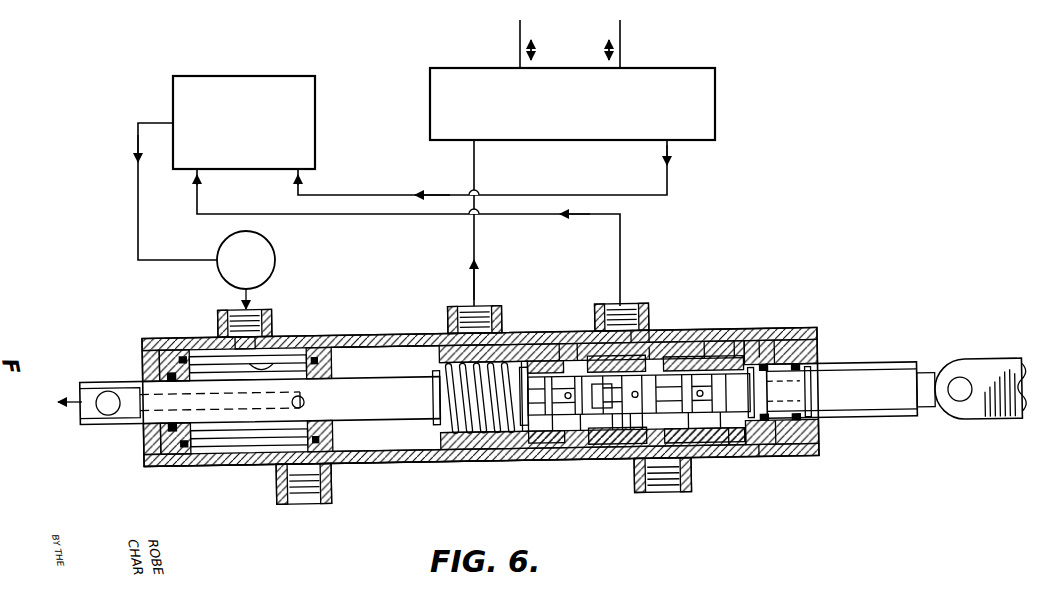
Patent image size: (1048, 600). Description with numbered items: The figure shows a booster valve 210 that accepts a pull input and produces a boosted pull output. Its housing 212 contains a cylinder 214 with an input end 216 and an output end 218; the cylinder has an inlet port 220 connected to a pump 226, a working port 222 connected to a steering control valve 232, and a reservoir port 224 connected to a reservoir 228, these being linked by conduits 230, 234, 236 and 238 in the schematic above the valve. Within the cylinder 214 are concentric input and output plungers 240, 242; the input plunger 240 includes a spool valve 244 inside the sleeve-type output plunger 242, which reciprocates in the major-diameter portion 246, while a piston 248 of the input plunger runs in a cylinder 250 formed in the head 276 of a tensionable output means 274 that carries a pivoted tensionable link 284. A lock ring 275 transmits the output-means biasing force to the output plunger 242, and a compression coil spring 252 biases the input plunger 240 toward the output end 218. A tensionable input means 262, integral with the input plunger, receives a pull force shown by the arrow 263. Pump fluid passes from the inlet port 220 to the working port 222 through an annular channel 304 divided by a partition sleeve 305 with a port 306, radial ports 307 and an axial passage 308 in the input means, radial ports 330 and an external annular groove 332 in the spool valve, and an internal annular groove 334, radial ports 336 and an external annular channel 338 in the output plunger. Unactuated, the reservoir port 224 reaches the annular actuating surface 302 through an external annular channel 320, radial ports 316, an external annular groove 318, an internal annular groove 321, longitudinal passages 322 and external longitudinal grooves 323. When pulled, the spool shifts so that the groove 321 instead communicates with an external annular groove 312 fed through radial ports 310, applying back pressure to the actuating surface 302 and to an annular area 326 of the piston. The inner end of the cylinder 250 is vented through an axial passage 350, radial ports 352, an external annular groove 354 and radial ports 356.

The booster valve 210 is at (405, 466).
The housing 212 is at (236, 470).
The cylinder 214 is at (380, 335).
The input end 216 is at (150, 336).
The output end 218 is at (812, 333).
The inlet port 220 is at (272, 318).
The working port 222 is at (505, 320).
The reservoir port 224 is at (655, 322).
The pump 226 is at (275, 252).
The reservoir 228 is at (316, 111).
The conduit 230 is at (474, 148).
The steering control valve 232 is at (700, 68).
The return conduit 234 is at (667, 150).
The conduit 236 is at (520, 55).
The conduit 238 is at (620, 60).
The input plunger 240 is at (612, 440).
The output plunger 242 is at (526, 440).
The spool valve 244 is at (690, 345).
The major-diameter portion 246 is at (428, 336).
The piston 248 is at (760, 345).
The cylinder 250 is at (770, 340).
The compression coil spring 252 is at (484, 432).
The input means 262 is at (205, 440).
The arrow 263 is at (70, 412).
The output means 274 is at (838, 364).
The lock ring 275 is at (790, 338).
The head 276 is at (728, 456).
The tensionable link 284 is at (985, 360).
The annular actuating surface 302 is at (758, 458).
The annular channel 304 is at (320, 346).
The partition sleeve 305 is at (200, 342).
The port 306 is at (240, 347).
The radial ports 307 is at (296, 405).
The axial passage 308 is at (372, 405).
The radial ports 310 is at (639, 394).
The external annular groove 312 is at (642, 440).
The radial ports 316 is at (630, 440).
The external annular groove 318 is at (632, 305).
The external annular channel 320 is at (622, 440).
The internal annular groove 321 is at (650, 340).
The longitudinal passages 322 is at (660, 495).
The external longitudinal grooves 323 is at (735, 340).
The annular area 326 is at (720, 440).
The radial ports 330 is at (580, 440).
The external annular groove 332 is at (552, 440).
The internal annular groove 334 is at (578, 345).
The radial ports 336 is at (560, 340).
The external annular channel 338 is at (524, 342).
The axial passage 350 is at (770, 400).
The radial ports 352 is at (688, 440).
The external annular groove 354 is at (770, 382).
The radial ports 356 is at (705, 345).